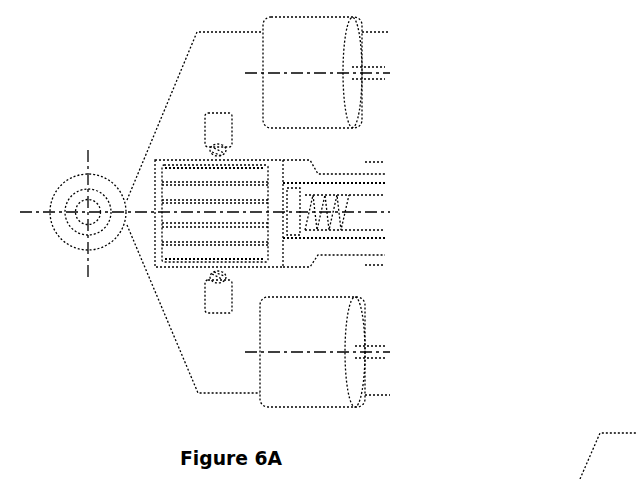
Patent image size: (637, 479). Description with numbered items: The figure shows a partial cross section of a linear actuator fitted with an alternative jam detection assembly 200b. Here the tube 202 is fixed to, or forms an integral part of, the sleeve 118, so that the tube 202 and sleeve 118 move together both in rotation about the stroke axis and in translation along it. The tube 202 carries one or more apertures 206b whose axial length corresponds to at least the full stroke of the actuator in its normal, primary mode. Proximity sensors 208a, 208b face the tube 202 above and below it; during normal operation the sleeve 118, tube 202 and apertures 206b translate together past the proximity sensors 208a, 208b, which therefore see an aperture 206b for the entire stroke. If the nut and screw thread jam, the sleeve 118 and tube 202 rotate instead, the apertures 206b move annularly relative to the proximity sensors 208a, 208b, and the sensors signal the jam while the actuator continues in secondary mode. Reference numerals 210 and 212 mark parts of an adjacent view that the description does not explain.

The sleeve 118 is at (383, 178).
The jam detection assembly 200b is at (185, 296).
The tube 202 is at (178, 267).
The apertures 206b is at (187, 190).
The proximity sensor 208a is at (218, 128).
The proximity sensor 208b is at (215, 300).
The adjacent module 210 is at (503, 478).
The adjacent module housing 212 is at (608, 478).